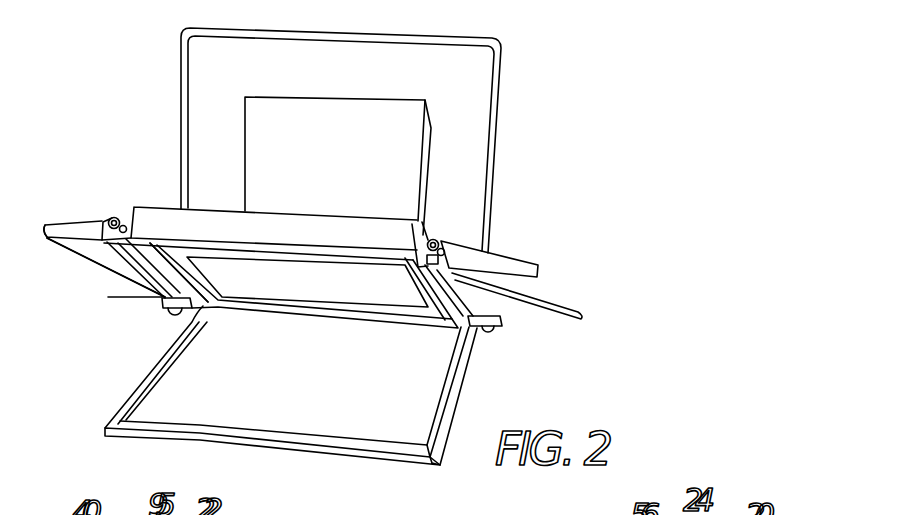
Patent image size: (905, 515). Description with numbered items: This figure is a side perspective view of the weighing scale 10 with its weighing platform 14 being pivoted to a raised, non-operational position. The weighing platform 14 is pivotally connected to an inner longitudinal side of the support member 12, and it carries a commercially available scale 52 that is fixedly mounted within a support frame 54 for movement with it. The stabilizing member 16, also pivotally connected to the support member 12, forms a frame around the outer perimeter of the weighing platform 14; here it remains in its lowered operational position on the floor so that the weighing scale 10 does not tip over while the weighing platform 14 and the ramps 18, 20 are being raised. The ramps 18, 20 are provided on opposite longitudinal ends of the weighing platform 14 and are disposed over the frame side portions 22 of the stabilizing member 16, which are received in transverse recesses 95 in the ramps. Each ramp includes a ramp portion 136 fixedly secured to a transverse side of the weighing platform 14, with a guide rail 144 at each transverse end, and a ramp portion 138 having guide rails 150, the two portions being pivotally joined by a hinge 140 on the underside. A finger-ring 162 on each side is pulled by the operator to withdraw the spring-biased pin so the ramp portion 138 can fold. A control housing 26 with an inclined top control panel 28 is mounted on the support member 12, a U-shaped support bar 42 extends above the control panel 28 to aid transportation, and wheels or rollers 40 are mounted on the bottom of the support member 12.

The weighing scale 10 is at (556, 152).
The support member 12 is at (497, 318).
The weighing platform 14 is at (281, 224).
The stabilizing member 16 is at (387, 464).
The ramp 18 is at (83, 250).
The ramp 20 is at (510, 292).
The frame side portion 22 is at (278, 405).
The control housing 26 is at (360, 145).
The top control panel 28 is at (432, 128).
The wheels or rollers 40 is at (163, 316).
The U-shaped support bar 42 is at (500, 103).
The scale 52 is at (366, 297).
The support frame 54 is at (286, 250).
The transverse recess 95 is at (165, 258).
The ramp portion 136 is at (202, 330).
The ramp portion 138 is at (118, 280).
The hinge 140 is at (117, 262).
The guide rail 144 is at (115, 183).
The guide rail 150 is at (77, 232).
The finger-ring 162 is at (114, 216).